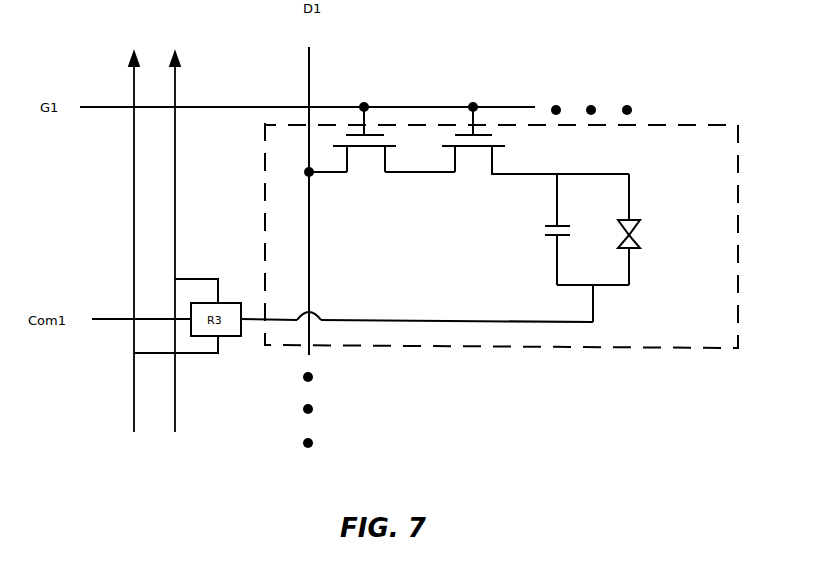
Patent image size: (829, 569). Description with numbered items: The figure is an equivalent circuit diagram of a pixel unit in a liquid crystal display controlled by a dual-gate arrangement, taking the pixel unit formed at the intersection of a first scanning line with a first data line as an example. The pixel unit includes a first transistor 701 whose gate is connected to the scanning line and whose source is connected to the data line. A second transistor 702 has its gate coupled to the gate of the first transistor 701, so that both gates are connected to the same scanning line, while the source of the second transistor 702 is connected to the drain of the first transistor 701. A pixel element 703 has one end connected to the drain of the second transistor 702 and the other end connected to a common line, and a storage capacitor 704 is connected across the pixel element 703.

The first transistor 701 is at (374, 150).
The second transistor 702 is at (482, 150).
The pixel element 703 is at (641, 236).
The storage capacitor 704 is at (550, 238).